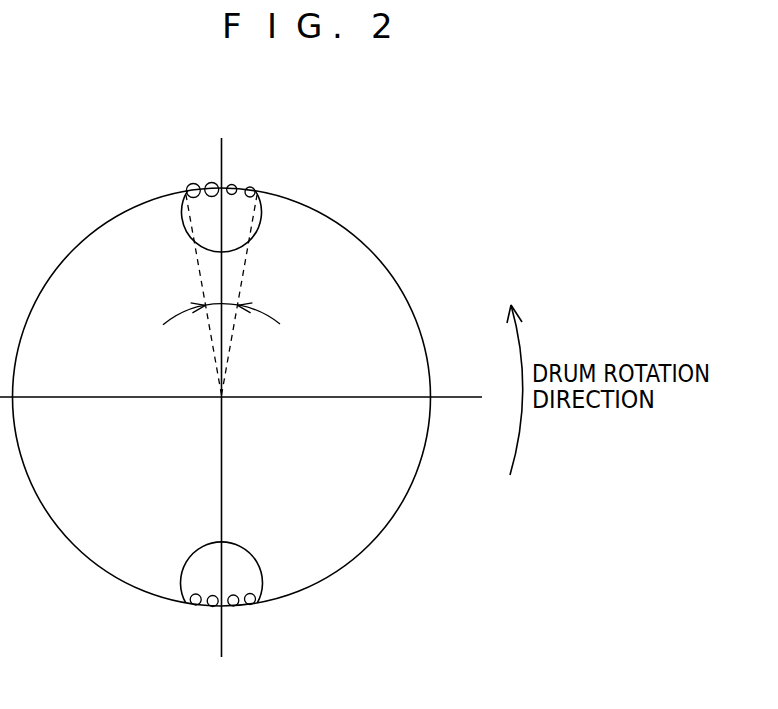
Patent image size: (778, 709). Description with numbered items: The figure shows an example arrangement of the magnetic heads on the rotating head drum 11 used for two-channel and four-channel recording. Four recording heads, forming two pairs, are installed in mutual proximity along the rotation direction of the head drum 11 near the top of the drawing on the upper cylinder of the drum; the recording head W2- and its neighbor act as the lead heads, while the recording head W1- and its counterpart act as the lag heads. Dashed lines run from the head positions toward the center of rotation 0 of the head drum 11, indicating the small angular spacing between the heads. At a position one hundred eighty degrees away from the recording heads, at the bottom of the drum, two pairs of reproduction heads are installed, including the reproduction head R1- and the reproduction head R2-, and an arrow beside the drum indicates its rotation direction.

The head drum 11 is at (385, 266).
The center of rotation of drum 0 is at (241, 397).
The recording head W1− W1- is at (232, 184).
The recording head W2− W2- is at (212, 182).
The reproduction head R1− R1- is at (212, 607).
The reproduction head R2− R2- is at (234, 606).